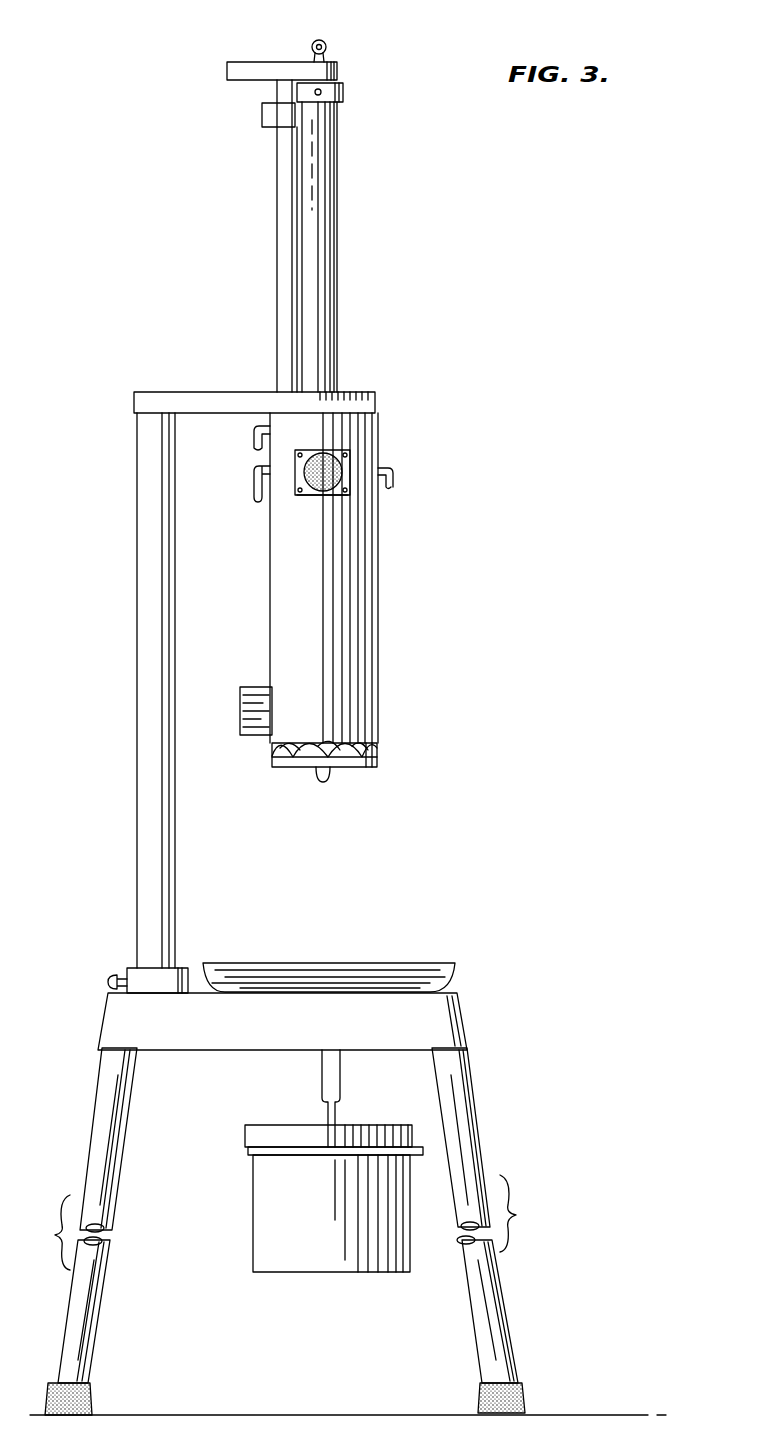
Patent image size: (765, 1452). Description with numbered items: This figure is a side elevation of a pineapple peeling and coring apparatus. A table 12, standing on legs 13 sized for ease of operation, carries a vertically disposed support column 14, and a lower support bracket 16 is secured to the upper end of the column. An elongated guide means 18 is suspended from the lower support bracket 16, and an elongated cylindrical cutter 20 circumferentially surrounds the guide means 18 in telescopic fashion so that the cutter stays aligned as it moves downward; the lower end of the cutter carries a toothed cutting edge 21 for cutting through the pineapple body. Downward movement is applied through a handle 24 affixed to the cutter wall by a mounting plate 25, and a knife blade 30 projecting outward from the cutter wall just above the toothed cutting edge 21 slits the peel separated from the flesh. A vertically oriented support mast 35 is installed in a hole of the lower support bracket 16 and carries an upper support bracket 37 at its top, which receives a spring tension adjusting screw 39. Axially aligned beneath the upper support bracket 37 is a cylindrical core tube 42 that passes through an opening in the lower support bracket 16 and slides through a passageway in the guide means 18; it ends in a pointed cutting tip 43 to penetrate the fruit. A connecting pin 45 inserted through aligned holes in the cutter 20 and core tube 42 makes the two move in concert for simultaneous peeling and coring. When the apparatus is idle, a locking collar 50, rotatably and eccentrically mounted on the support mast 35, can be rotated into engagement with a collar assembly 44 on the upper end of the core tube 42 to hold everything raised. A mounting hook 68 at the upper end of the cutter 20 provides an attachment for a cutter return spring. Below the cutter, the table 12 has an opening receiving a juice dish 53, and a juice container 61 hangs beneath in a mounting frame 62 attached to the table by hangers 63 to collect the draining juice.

The table 12 is at (120, 1012).
The legs 13 is at (90, 1309).
The support column 14 is at (145, 780).
The lower support bracket 16 is at (232, 396).
The guide means 18 is at (360, 764).
The cylindrical cutter 20 is at (365, 578).
The toothed cutting edge 21 is at (312, 757).
The handle 24 is at (345, 478).
The mounting plate 25 is at (312, 494).
The knife blade 30 is at (256, 737).
The support mast 35 is at (285, 246).
The upper support bracket 37 is at (232, 75).
The spring tension adjusting screw 39 is at (327, 45).
The core tube 42 is at (327, 312).
The pointed cutting tip 43 is at (325, 784).
The collar assembly 44 is at (345, 92).
The connecting pin 45 is at (252, 470).
The locking collar 50 is at (265, 118).
The juice dish 53 is at (412, 975).
The juice container 61 is at (350, 1258).
The mounting frame 62 is at (332, 1150).
The hangers 63 is at (325, 1070).
The mounting hook 68 is at (252, 430).